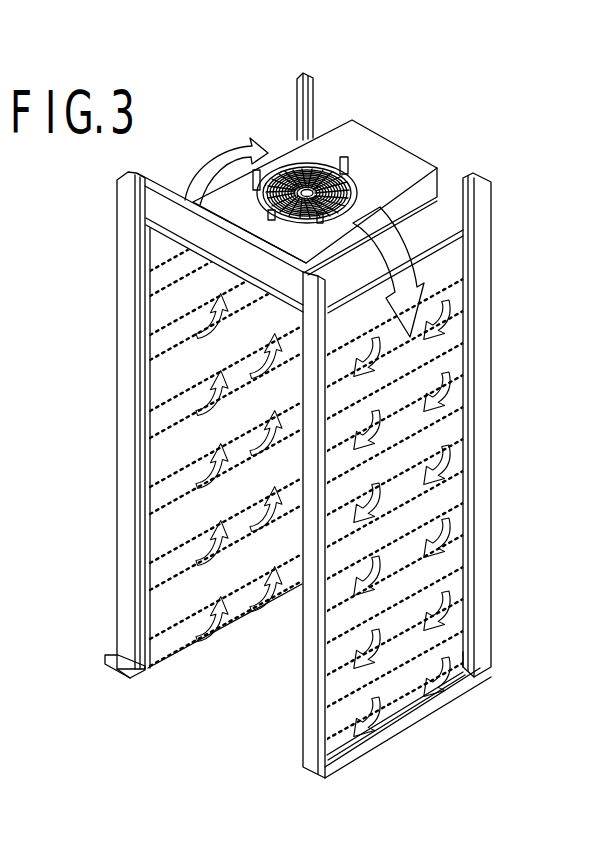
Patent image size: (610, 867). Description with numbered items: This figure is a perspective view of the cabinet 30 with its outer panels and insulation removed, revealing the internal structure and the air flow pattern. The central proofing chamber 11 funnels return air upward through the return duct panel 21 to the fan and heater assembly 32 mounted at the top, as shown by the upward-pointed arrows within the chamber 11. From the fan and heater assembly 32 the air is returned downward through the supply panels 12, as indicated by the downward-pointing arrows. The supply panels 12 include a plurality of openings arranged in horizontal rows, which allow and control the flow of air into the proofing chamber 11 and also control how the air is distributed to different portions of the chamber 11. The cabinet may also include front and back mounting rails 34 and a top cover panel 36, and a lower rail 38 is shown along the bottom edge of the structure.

The central proofing chamber 11 is at (238, 667).
The supply panels 12 is at (153, 655).
The return duct panel 21 is at (465, 236).
The cabinet 30 is at (521, 380).
The fan and heater assembly 32 is at (345, 160).
The front and back mounting rails 34 is at (117, 400).
The top cover panel 36 is at (158, 198).
The bottom rail 38 is at (398, 732).